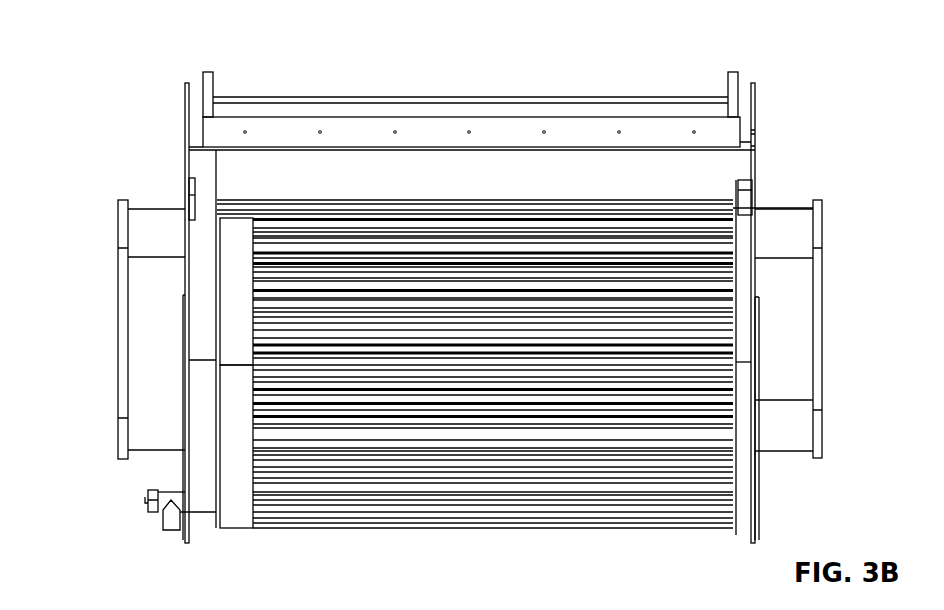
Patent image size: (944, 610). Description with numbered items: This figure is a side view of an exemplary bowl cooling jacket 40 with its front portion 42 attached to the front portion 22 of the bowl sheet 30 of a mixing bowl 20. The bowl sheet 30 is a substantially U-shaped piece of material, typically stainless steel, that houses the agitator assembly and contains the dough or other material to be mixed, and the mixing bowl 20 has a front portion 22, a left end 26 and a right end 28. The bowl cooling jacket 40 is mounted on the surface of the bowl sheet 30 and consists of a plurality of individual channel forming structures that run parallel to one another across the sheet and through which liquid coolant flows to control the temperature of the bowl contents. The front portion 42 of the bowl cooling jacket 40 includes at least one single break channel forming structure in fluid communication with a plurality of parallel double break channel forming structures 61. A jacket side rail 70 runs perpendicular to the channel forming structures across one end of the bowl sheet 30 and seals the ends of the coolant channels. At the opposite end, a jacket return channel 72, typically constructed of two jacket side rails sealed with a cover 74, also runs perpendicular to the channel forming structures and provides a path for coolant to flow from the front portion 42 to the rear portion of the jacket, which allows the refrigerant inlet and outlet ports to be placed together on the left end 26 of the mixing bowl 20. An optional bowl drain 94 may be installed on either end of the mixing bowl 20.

The mixing bowl 20 is at (134, 64).
The front portion 22 is at (717, 168).
The left end 26 is at (185, 165).
The right end 28 is at (756, 505).
The bowl sheet 30 is at (293, 339).
The bowl cooling jacket 40 is at (576, 190).
The front portion of bowl cooling jacket 42 is at (370, 521).
The double break channel forming structure 61 is at (715, 212).
The jacket side rail 70 is at (744, 503).
The jacket return channel 72 is at (231, 532).
The cover 74 is at (235, 236).
The bowl drain 94 is at (148, 497).